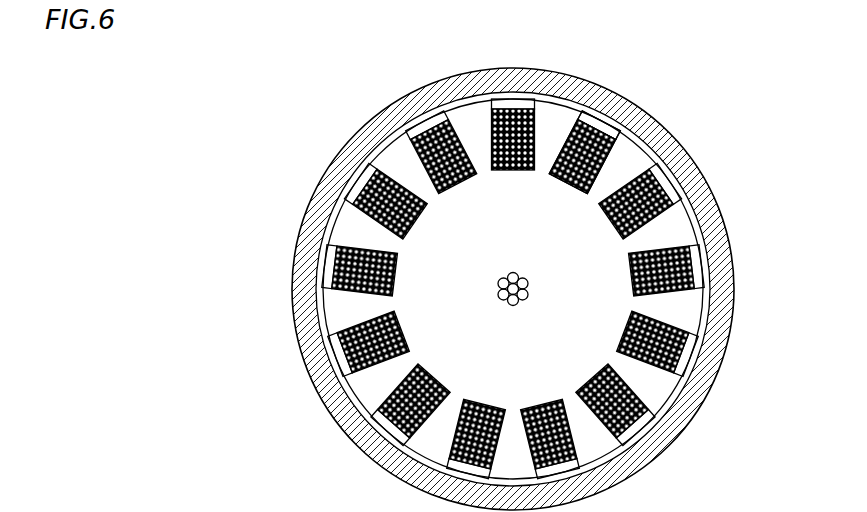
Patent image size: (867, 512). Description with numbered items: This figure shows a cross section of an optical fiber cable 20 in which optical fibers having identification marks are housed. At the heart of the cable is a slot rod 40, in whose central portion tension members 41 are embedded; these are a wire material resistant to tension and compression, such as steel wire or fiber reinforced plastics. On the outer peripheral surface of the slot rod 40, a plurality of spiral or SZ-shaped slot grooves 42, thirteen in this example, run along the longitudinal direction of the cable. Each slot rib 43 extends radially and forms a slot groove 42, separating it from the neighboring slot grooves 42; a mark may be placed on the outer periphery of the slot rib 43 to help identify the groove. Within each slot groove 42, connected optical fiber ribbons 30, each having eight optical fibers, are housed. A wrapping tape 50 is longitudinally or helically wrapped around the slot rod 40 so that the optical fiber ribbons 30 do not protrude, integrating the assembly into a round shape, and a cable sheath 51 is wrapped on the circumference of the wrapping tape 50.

The optical fiber cable 20 is at (694, 139).
The optical fiber ribbons 30 is at (593, 130).
The slot rod 40 is at (540, 281).
The tension members 41 is at (498, 283).
The slot grooves 42 is at (633, 430).
The slot rib 43 is at (370, 393).
The wrapping tape 50 is at (703, 299).
The cable sheath 51 is at (310, 328).